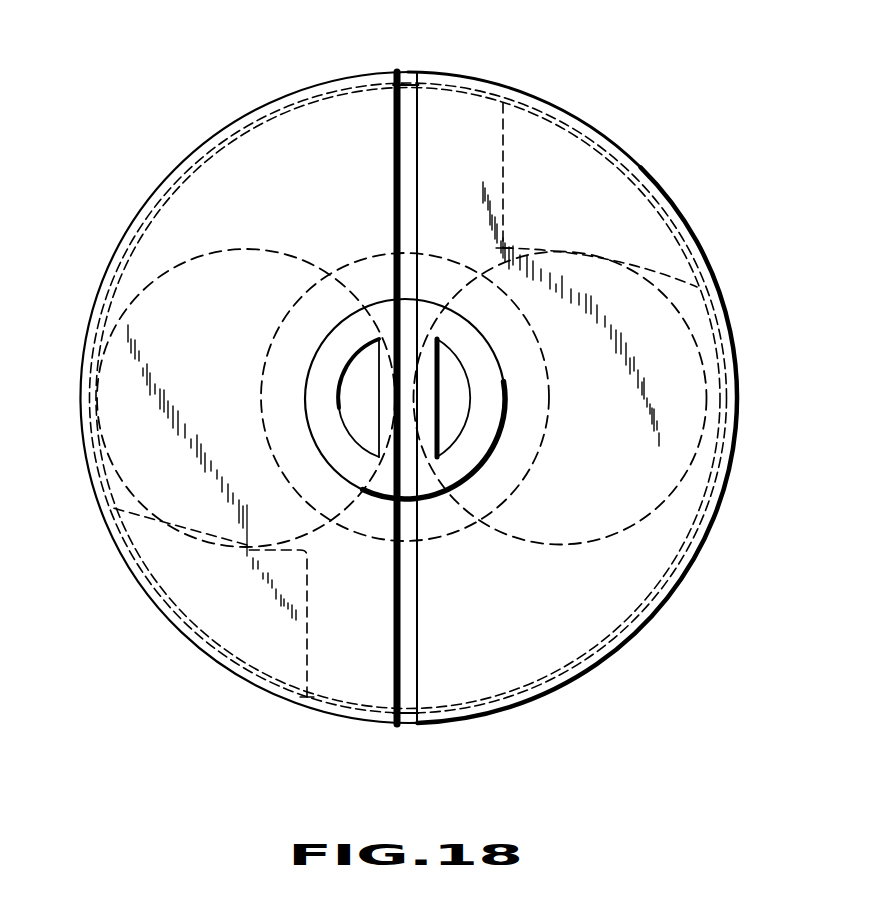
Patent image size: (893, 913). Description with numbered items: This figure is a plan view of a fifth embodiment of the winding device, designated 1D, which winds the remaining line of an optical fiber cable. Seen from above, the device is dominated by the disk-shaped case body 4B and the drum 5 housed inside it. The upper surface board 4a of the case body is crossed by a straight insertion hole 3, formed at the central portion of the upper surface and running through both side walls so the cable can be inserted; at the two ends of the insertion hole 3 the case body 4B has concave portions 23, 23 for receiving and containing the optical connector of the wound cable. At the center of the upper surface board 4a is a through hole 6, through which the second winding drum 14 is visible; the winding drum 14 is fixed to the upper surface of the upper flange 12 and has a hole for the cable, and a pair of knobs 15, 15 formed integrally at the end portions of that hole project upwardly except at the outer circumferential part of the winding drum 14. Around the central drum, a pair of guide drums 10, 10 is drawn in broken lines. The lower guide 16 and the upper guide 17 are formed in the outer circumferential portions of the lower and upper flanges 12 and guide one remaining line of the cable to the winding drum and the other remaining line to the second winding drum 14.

The disc-shaped device 1D is at (650, 84).
The insertion hole 3 is at (393, 663).
The upper surface board 4a is at (278, 145).
The case body 4B is at (664, 607).
The drum 5 is at (167, 191).
The through hole 6 is at (497, 420).
The guide drums 10 is at (118, 468).
The upper flange 12 is at (548, 665).
The second winding drum 14 is at (468, 530).
The knobs 15 is at (378, 381).
The lower guide 16 is at (193, 592).
The upper guide 17 is at (627, 212).
The concave portions 23 is at (421, 74).